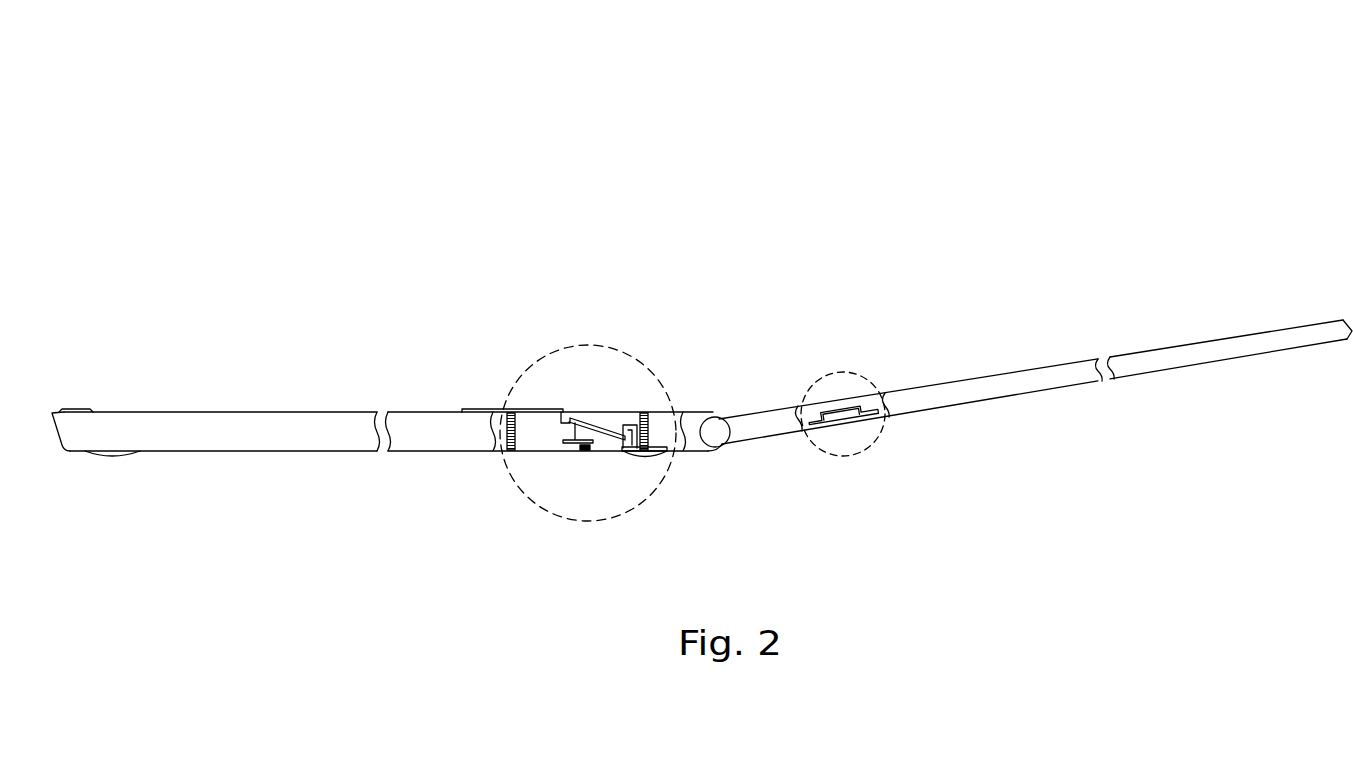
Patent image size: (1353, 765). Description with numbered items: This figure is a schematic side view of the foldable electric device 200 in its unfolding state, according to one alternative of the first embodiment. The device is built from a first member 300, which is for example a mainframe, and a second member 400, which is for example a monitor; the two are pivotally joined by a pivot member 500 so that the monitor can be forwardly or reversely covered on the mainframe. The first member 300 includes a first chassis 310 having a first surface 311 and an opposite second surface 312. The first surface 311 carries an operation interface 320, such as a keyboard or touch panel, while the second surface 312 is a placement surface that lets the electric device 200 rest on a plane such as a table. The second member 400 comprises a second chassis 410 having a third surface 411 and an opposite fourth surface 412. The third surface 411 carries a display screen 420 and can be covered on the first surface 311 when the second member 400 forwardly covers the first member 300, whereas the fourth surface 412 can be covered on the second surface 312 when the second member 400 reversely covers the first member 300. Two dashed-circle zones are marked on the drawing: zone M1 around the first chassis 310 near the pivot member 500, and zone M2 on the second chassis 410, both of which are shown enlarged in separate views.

The electric device 200 is at (1183, 93).
The first member 300 is at (188, 346).
The first chassis 310 is at (420, 398).
The first surface 311 is at (111, 411).
The second surface 312 is at (280, 452).
The operation interface 320 is at (271, 411).
The second member 400 is at (1124, 298).
The second chassis 410 is at (1029, 405).
The third surface 411 is at (1223, 336).
The fourth surface 412 is at (1208, 362).
The display screen 420 is at (953, 383).
The pivot member 500 is at (722, 452).
The zone M1 is at (587, 344).
The zone M2 is at (836, 372).